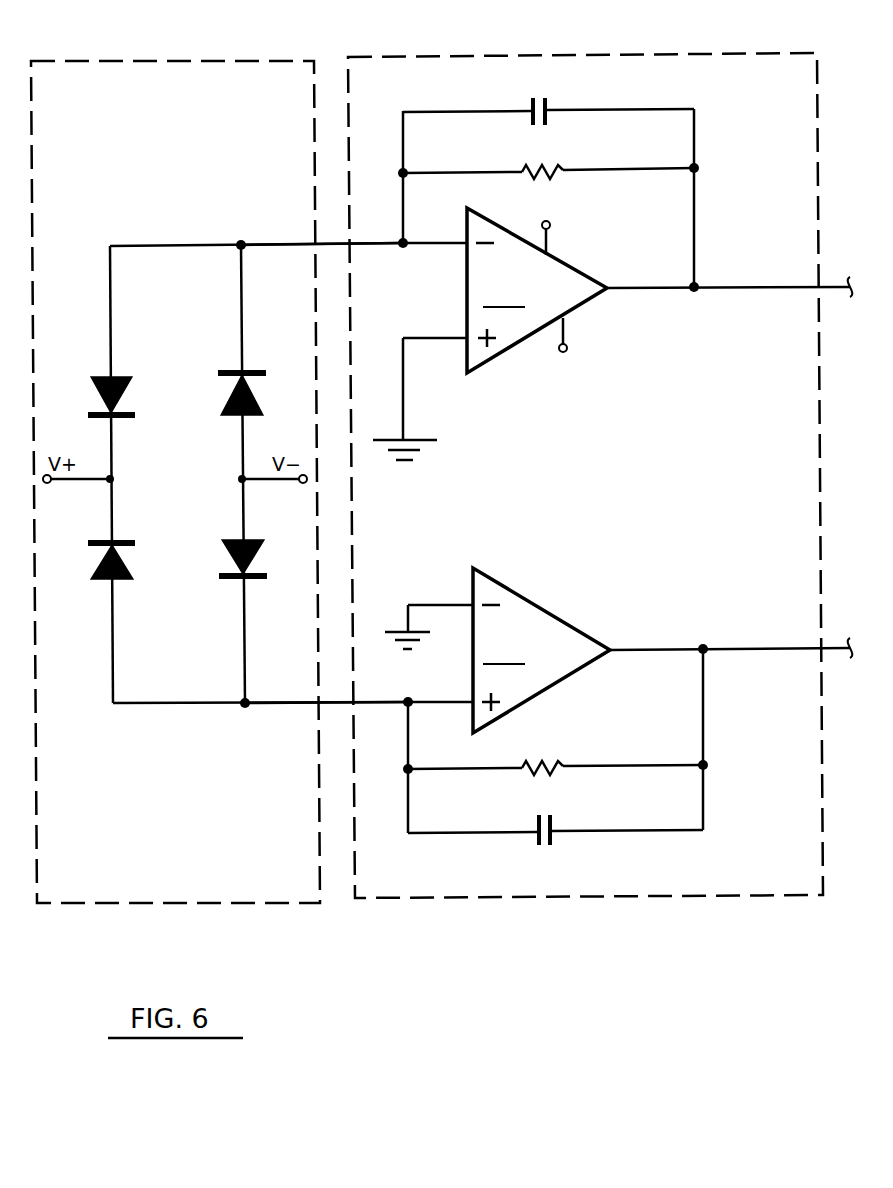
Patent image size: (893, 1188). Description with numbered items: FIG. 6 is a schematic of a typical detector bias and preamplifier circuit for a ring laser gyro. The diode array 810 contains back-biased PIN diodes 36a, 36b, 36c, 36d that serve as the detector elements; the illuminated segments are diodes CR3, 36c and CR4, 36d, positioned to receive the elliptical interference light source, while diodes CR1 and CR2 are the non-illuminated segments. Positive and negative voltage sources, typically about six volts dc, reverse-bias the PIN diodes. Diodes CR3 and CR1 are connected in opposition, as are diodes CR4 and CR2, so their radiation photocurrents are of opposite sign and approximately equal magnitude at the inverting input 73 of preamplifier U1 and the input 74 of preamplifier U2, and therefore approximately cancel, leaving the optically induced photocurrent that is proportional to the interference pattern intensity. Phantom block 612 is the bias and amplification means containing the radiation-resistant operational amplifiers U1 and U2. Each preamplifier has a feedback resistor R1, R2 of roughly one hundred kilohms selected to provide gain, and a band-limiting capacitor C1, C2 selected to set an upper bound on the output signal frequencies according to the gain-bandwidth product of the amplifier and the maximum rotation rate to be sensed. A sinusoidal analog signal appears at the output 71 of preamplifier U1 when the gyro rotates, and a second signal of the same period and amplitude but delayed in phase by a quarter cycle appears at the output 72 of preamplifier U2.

The PIN diode 36a is at (115, 379).
The PIN diode 36b is at (114, 540).
The PIN diode 36c is at (246, 372).
The PIN diode 36d is at (246, 541).
The inverting input node of amplifier U1 73 is at (371, 243).
The non-inverting input node of amplifier U2 74 is at (408, 702).
The output of amplifier U1 71 is at (663, 289).
The output of amplifier U2 72 is at (663, 649).
The diode array 810 is at (220, 850).
The bias and amplification means 612 is at (780, 849).
The first detector CR1 is at (289, 385).
The second detector CR2 is at (284, 557).
The illuminated PIN diode segment CR3 is at (152, 385).
The illuminated PIN diode segment CR4 is at (156, 558).
The preamplifier U1 is at (537, 293).
The preamplifier U2 is at (541, 650).
The feedback resistor R1 is at (542, 186).
The feedback resistor R2 is at (545, 763).
The band-limiting capacitor C1 is at (533, 102).
The band-limiting capacitor C2 is at (551, 846).